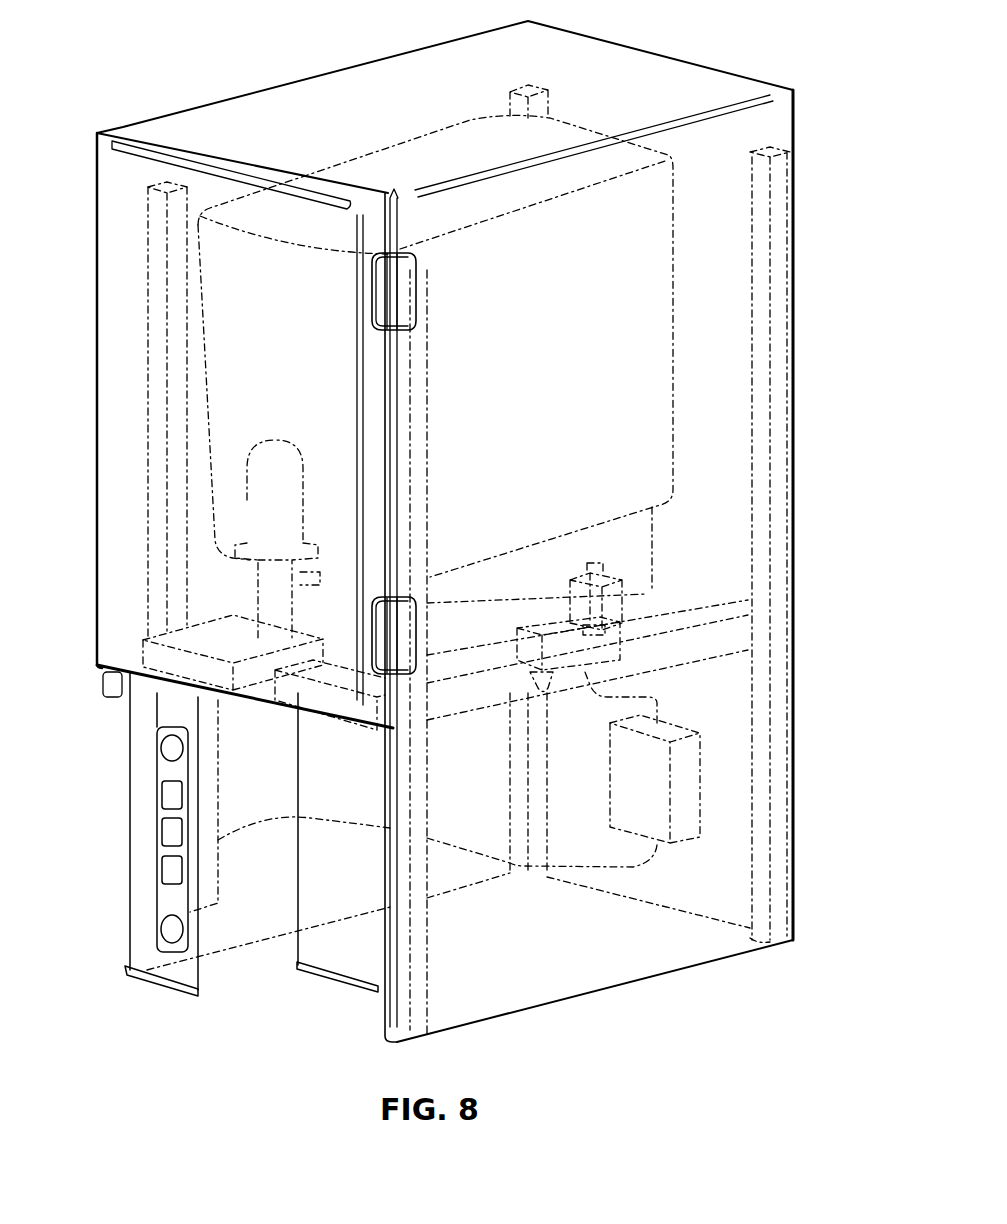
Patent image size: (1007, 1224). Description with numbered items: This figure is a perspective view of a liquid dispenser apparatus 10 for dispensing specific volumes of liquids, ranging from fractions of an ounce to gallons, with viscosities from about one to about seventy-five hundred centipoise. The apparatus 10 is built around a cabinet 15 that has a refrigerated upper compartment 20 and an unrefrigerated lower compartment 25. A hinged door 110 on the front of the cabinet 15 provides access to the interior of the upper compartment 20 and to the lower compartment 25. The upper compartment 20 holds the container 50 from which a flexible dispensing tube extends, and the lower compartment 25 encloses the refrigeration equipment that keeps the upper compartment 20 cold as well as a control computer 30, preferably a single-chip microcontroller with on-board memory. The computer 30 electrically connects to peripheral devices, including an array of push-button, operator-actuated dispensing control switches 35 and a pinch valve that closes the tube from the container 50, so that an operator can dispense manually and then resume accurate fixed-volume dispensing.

The liquid dispenser apparatus 10 is at (784, 26).
The cabinet 15 is at (589, 566).
The refrigerated upper compartment 20 is at (715, 408).
The unrefrigerated lower compartment 25 is at (727, 718).
The control computer 30 is at (700, 784).
The dispensing control switches 35 is at (160, 807).
The container 50 is at (640, 298).
The hinged door 110 is at (130, 390).